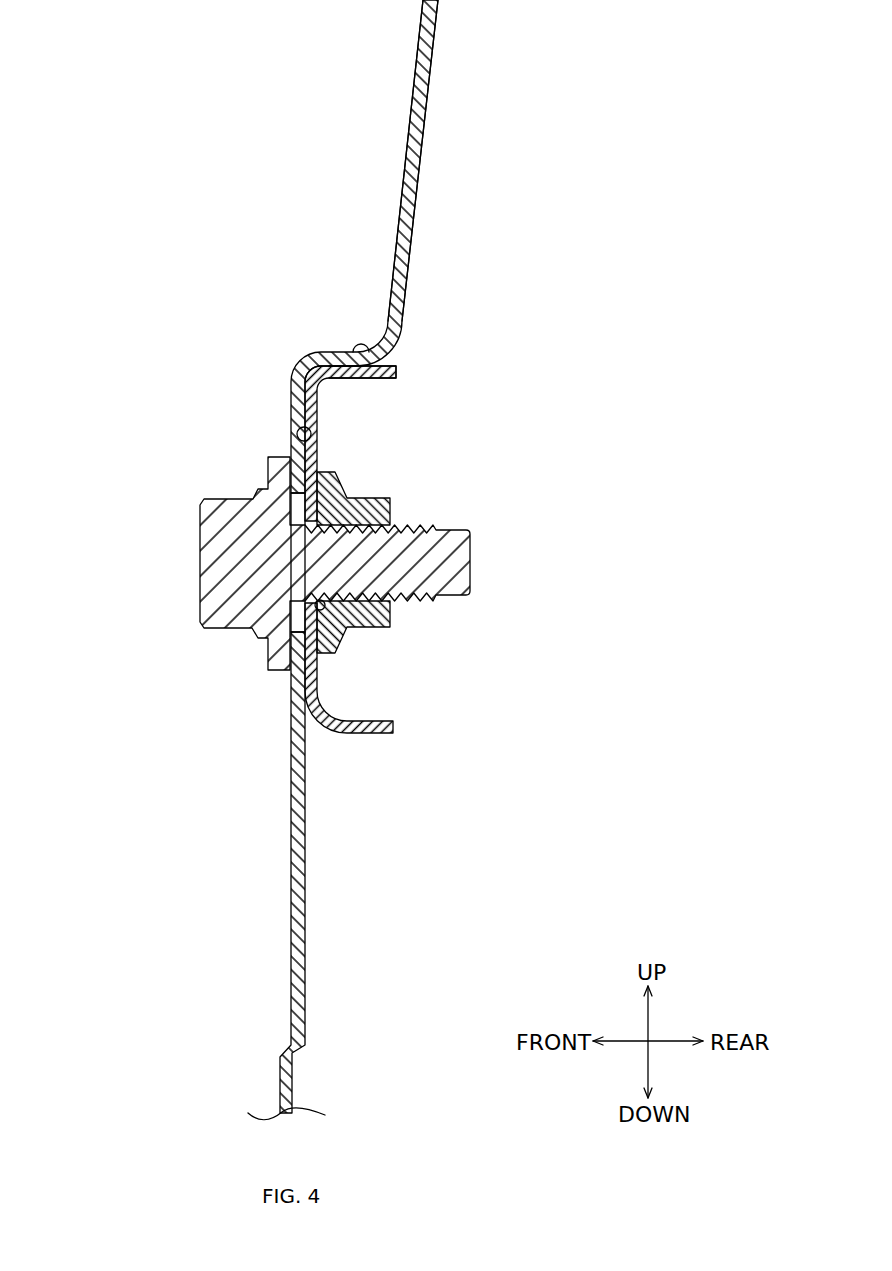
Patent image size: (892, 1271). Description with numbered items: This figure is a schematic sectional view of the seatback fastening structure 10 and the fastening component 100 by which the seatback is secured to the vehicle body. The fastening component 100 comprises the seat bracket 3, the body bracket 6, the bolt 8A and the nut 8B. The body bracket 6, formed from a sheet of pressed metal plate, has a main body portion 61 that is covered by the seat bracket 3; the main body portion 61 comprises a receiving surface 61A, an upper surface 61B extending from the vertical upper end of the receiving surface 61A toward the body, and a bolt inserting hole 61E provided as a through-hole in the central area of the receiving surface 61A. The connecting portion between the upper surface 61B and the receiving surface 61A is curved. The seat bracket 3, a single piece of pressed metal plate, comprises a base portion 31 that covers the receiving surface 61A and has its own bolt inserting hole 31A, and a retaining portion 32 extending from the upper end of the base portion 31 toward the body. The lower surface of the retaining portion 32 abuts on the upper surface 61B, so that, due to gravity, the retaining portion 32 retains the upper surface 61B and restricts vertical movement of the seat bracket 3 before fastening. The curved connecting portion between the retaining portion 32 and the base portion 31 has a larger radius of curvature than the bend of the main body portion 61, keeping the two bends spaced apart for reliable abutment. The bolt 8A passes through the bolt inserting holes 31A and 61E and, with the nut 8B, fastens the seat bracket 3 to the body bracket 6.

The seatback fastening structure 10 is at (170, 138).
The fastening component 100 is at (217, 297).
The seat bracket 3 is at (393, 195).
The base portion 31 is at (298, 399).
The bolt inserting hole 31A is at (297, 514).
The retaining portion 32 is at (342, 357).
The body bracket 6 is at (384, 549).
The main body portion 61 is at (305, 677).
The receiving surface 61A is at (313, 436).
The upper surface 61B is at (367, 372).
The bolt inserting hole 61E is at (323, 605).
The bolt 8A is at (230, 612).
The nut 8B is at (367, 510).